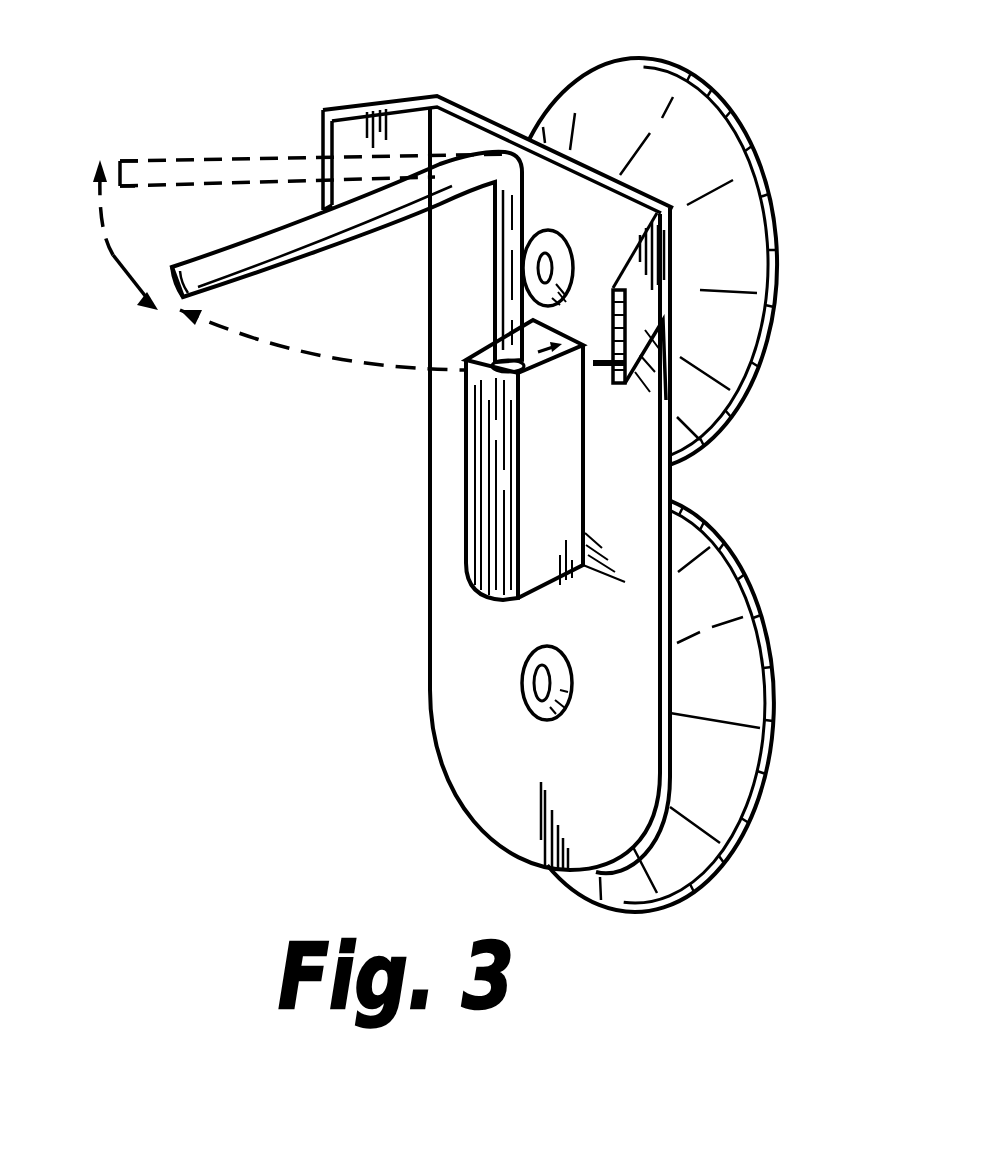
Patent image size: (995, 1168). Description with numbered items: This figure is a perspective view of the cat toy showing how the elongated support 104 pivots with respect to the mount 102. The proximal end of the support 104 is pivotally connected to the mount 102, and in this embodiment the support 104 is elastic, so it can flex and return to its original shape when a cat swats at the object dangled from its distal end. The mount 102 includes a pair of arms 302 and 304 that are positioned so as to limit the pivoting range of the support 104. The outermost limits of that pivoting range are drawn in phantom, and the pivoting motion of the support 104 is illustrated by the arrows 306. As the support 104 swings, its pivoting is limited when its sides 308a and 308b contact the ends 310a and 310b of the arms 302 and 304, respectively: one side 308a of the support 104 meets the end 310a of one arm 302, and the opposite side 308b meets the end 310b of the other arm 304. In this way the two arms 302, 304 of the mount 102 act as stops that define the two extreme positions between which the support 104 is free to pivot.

The mount 102 is at (440, 508).
The support 104 is at (175, 300).
The arm 302 is at (663, 282).
The arm 304 is at (401, 127).
The arrows 306 is at (108, 265).
The side of the support 308a is at (262, 270).
The side of the support 308b is at (273, 233).
The end of the arm 310a is at (604, 330).
The end of the arm 310b is at (322, 172).